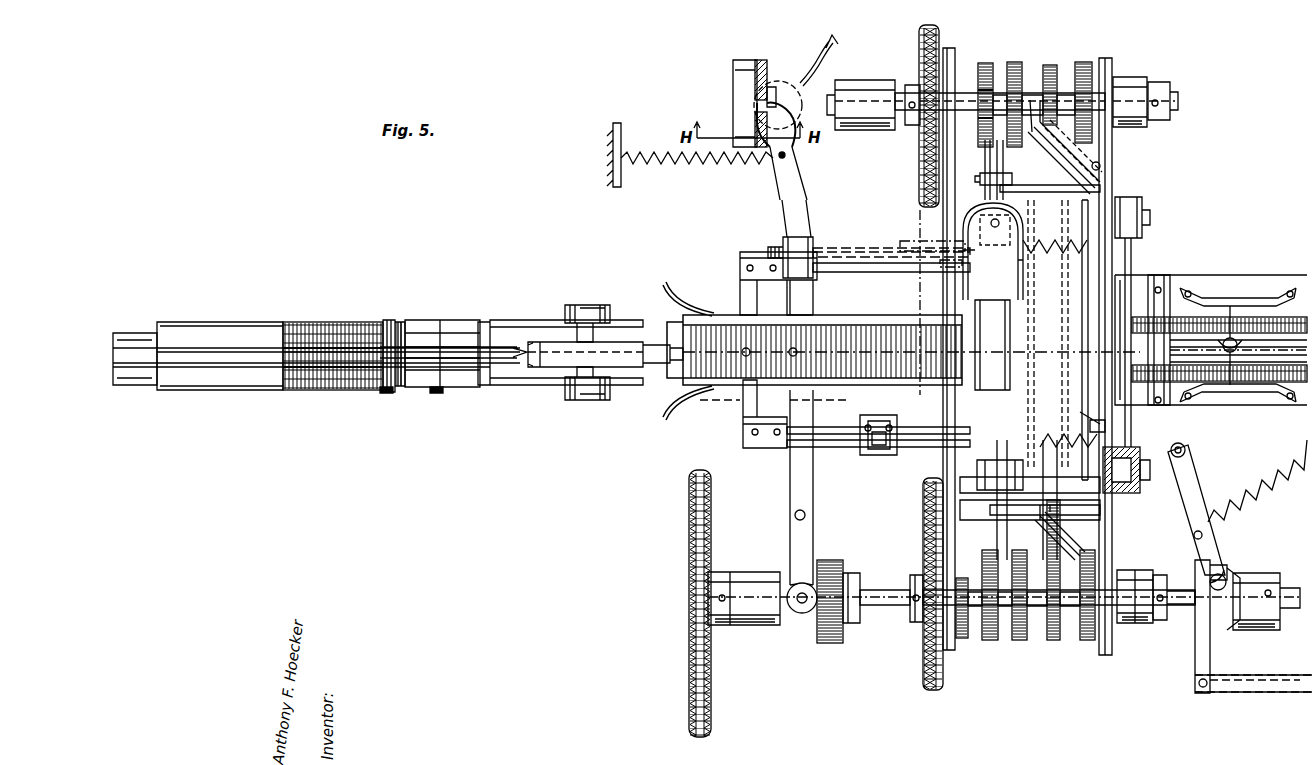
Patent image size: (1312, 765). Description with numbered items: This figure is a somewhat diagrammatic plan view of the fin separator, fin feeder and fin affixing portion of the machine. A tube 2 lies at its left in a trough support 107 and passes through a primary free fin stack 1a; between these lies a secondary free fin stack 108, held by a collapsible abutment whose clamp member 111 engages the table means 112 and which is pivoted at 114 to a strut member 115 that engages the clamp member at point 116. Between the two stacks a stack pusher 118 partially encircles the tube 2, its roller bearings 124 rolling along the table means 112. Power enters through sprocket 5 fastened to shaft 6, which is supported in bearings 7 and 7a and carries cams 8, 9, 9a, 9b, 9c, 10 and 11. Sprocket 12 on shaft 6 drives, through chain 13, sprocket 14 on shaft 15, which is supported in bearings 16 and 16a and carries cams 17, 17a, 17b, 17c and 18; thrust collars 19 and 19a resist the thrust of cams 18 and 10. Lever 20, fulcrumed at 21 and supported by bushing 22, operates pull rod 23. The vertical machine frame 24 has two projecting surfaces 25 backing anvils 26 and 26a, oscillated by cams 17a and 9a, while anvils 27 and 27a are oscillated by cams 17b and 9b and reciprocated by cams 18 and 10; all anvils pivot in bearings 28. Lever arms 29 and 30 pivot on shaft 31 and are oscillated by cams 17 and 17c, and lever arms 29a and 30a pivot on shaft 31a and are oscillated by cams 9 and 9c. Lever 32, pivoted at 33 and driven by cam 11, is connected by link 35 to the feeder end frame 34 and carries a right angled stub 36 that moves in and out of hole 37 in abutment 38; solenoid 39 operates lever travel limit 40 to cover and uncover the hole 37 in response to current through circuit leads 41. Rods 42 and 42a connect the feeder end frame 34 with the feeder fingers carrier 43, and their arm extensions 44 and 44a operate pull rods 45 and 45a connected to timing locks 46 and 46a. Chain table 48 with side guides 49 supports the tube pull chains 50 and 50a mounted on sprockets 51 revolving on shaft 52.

The trough support 107 is at (150, 335).
The tube 2 is at (210, 347).
The table means 112 is at (277, 377).
The secondary free fin stack 108 is at (343, 330).
The pivot 114 is at (388, 320).
The strut member 115 is at (440, 333).
The clamp member 111 is at (445, 392).
The engagement point 116 is at (490, 380).
The stack pusher 118 is at (620, 342).
The roller bearings 124 is at (582, 392).
The primary free fin stack 1a is at (672, 388).
The abutment 38 is at (740, 60).
The right angled stub 36 is at (755, 90).
The hole 37 is at (755, 125).
The lever travel limit 40 is at (790, 95).
The solenoid 39 is at (780, 80).
The circuit leads 41 is at (830, 40).
The lever 32 is at (790, 547).
The pivot 33 is at (795, 513).
The arm extension 44 is at (812, 247).
The rod 42 is at (853, 272).
The pull rod 45 is at (873, 248).
The feeder fingers carrier 43 is at (920, 290).
The feeder end frame 34 is at (743, 410).
The link 35 is at (805, 407).
The rod 42a is at (843, 436).
The pull rod 45a is at (910, 449).
The arm extension 44a is at (872, 456).
The sprocket 14 is at (920, 32).
The cam 18 is at (952, 50).
The chain 13 is at (935, 685).
The sprocket 5 is at (689, 563).
The machine frame 24 is at (1112, 147).
The bearing 16a is at (855, 80).
The shaft 15 is at (908, 85).
The cam 17c is at (983, 63).
The cam 17b is at (1014, 62).
The cam 17a is at (1050, 65).
The cam 17 is at (1084, 62).
The bearing 16 is at (1128, 77).
The thrust collar 19 is at (1158, 82).
The lever arm 30 is at (990, 152).
The shaft 31 is at (980, 179).
The lever arm 29 is at (1040, 158).
The anvil 27 is at (1102, 166).
The anvil 26 is at (1112, 183).
The timing lock 46 is at (1010, 258).
The timing lock 46a is at (1010, 420).
The bearings 28 is at (1142, 212).
The projecting surfaces 25 is at (1117, 290).
The anvil 26a is at (1100, 505).
The anvil 27a is at (1105, 515).
The lever arm 30a is at (997, 540).
The shaft 31a is at (990, 514).
The lever arm 29a is at (1040, 530).
The chain table 48 is at (1265, 285).
The sprockets 51 is at (1150, 296).
The shaft 52 is at (1150, 350).
The tube pull chain 50 is at (1205, 296).
The tube pull chain 50a is at (1240, 390).
The side guides 49 is at (1228, 300).
The fulcrum 21 is at (1186, 450).
The lever 20 is at (1210, 540).
The shaft 6 is at (880, 590).
The bearing 7a is at (752, 625).
The cam 11 is at (829, 643).
The sprocket 12 is at (915, 645).
The cam 10 is at (962, 640).
The cam 9c is at (992, 640).
The cam 9b is at (1022, 640).
The cam 9a is at (1054, 640).
The cam 9 is at (1088, 640).
The bearing 7 is at (1135, 623).
The thrust collar 19a is at (1160, 620).
The bushing 22 is at (1212, 600).
The pull rod 23 is at (1243, 692).
The cam 8 is at (1256, 630).